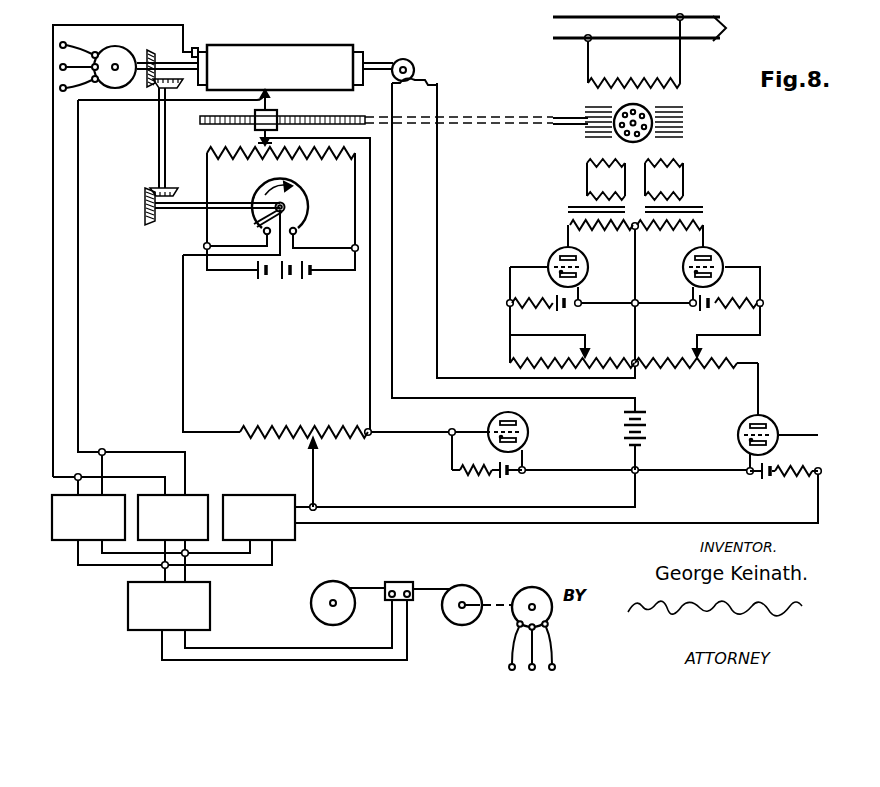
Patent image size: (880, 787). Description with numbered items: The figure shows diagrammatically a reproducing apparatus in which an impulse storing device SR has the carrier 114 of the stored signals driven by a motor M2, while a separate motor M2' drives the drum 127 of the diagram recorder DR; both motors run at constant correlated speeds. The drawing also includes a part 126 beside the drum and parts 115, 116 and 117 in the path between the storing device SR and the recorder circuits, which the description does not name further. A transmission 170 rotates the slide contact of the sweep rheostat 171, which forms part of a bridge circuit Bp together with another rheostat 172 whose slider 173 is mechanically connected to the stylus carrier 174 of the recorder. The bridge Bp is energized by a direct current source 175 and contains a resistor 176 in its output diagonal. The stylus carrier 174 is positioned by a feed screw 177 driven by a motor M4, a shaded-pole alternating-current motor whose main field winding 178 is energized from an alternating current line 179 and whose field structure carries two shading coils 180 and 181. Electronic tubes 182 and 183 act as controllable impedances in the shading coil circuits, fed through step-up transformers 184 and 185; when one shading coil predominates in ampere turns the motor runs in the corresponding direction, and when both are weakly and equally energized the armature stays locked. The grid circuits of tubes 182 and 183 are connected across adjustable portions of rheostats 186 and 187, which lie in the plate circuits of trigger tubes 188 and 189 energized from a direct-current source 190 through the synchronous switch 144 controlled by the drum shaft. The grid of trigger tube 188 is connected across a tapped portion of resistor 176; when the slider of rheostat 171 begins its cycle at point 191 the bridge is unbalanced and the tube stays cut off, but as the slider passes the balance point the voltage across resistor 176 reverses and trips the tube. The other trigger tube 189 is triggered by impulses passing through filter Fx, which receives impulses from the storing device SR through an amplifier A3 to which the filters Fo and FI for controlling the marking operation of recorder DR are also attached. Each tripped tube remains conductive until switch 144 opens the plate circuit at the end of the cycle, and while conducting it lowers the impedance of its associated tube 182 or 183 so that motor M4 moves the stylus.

The motor M2' is at (108, 62).
The diagram recorder DR is at (277, 36).
The drum 127 is at (295, 50).
The pulley 126 is at (383, 66).
The synchronous switch 144 is at (414, 121).
The stylus carrier 174 is at (278, 112).
The feed screw 177 is at (223, 122).
The slider 173 is at (259, 142).
The transmission 170 is at (160, 146).
The rheostat 172 is at (246, 159).
The sweep rheostat 171 is at (303, 192).
The point 191 is at (262, 232).
The bridge circuit Bp is at (331, 241).
The direct current source 175 is at (283, 278).
The resistor 176 is at (278, 420).
The alternating current line 179 is at (657, 28).
The main field winding 178 is at (631, 83).
The motor M4 is at (718, 134).
The shading coil 180 is at (588, 163).
The shading coil 181 is at (683, 163).
The step-up transformer 184 is at (567, 210).
The step-up transformer 185 is at (704, 210).
The electronic tube 182 is at (555, 252).
The electronic tube 183 is at (721, 250).
The rheostat 186 is at (597, 340).
The rheostat 187 is at (677, 355).
The trigger tube 188 is at (528, 433).
The trigger tube 189 is at (738, 433).
The direct-current source 190 is at (650, 410).
The filter FI is at (70, 535).
The filter Fo is at (208, 500).
The filter Fx is at (282, 538).
The amplifier A3 is at (203, 628).
The relay coil 116 is at (326, 620).
The relay contacts 117 is at (386, 582).
The carrier 114 is at (430, 588).
The impulse storing device SR is at (464, 653).
The shaft 115 is at (466, 593).
The motor M2 is at (532, 616).